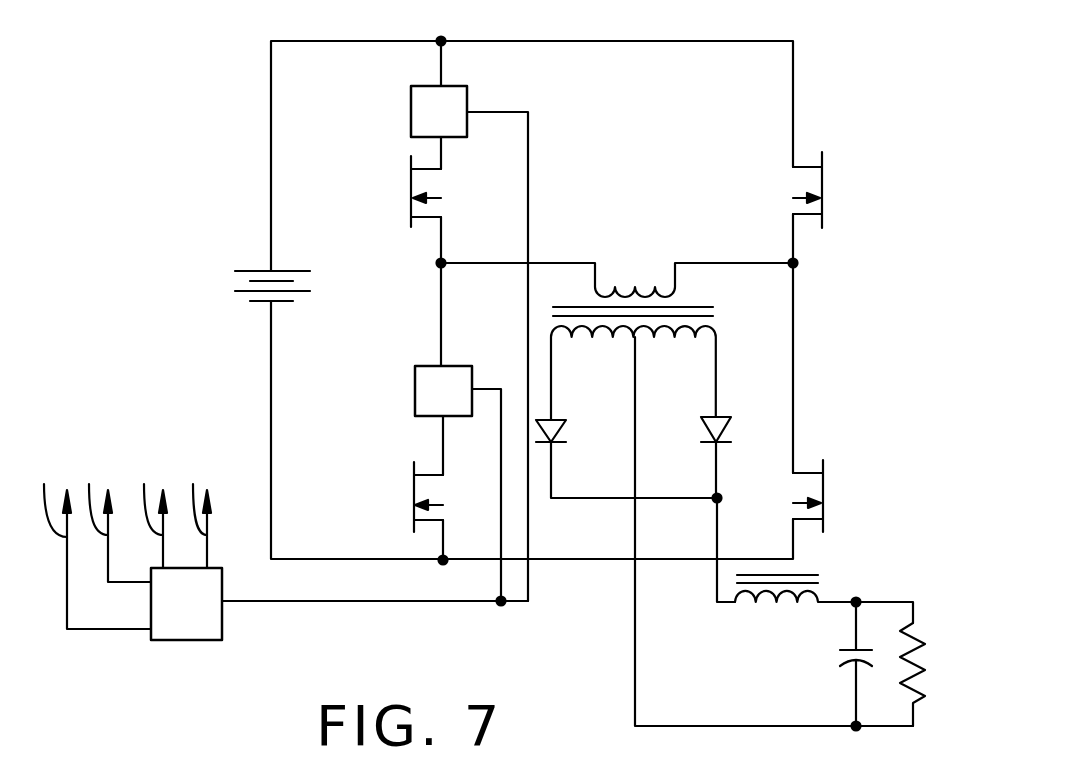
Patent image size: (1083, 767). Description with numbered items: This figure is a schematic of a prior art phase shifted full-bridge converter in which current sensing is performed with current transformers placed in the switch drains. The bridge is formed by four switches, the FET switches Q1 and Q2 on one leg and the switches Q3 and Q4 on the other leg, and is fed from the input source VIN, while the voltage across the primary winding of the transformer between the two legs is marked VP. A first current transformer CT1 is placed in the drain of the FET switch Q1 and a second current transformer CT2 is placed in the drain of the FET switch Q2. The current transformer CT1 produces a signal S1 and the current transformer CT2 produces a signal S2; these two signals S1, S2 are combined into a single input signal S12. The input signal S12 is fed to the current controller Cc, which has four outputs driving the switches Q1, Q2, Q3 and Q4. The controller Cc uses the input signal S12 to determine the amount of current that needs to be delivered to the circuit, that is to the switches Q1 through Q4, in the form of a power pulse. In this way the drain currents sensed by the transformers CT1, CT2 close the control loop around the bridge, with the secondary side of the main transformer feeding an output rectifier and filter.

The FET switch Q1 is at (402, 191).
The FET switch Q2 is at (402, 497).
The switch Q3 is at (781, 190).
The switch Q4 is at (787, 496).
The current transformer CT1 is at (452, 86).
The current transformer CT2 is at (431, 366).
The signal S1 is at (528, 184).
The signal S2 is at (501, 522).
The input signal S12 is at (398, 603).
The current controller Cc is at (196, 641).
The input voltage source VIN is at (258, 270).
The primary winding voltage VP is at (686, 243).